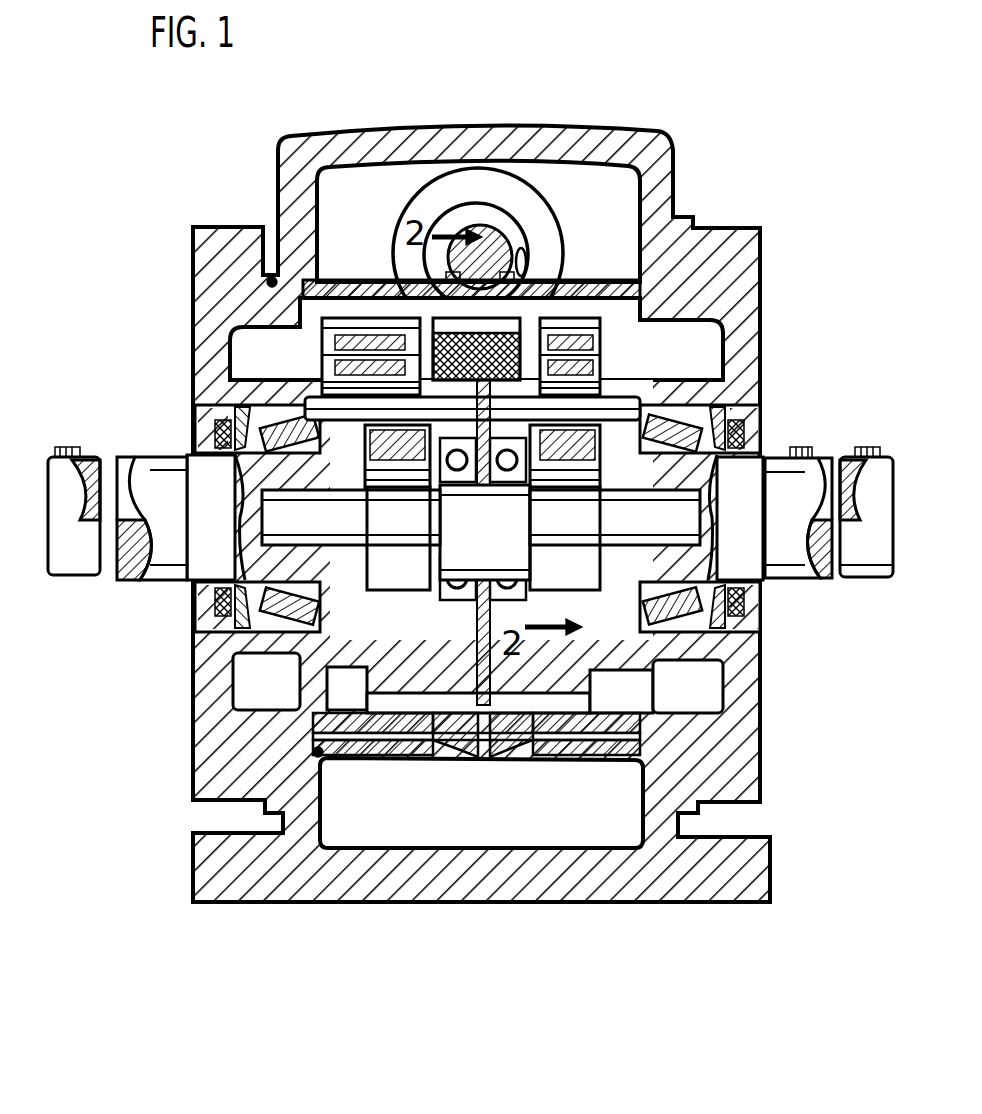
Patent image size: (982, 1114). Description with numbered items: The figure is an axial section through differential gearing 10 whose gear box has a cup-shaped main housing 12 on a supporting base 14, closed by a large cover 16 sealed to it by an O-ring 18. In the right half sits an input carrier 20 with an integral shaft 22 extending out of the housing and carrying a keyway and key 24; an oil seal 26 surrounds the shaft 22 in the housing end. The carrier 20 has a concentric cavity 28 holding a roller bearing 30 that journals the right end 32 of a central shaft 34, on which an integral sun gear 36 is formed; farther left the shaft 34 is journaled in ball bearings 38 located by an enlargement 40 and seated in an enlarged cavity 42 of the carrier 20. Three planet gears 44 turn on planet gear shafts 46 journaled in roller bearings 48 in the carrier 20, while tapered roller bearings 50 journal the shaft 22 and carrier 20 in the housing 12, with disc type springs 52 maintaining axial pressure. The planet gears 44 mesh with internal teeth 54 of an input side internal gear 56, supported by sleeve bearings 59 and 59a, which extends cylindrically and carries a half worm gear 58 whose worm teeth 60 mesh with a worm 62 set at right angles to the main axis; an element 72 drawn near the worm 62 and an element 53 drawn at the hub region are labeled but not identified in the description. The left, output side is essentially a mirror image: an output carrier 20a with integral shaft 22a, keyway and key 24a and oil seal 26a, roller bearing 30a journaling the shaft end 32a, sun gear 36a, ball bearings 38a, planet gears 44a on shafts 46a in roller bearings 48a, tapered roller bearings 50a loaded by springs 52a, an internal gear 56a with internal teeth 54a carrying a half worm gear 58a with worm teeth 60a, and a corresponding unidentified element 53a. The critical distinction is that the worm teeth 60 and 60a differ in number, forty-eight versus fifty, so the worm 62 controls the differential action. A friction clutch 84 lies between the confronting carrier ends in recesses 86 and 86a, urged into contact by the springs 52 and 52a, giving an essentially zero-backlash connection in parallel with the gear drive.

The differential gearing 10 is at (534, 110).
The main housing 12 is at (655, 132).
The supporting base 14 is at (495, 900).
The large cover 16 is at (218, 233).
The O-ring 18 is at (270, 278).
The input carrier 20 is at (610, 666).
The output carrier 20a is at (345, 668).
The integral shaft 22 is at (788, 462).
The integral output shaft 22a is at (160, 565).
The keyway and key 24 is at (856, 452).
The keyway and key 24a is at (74, 511).
The oil seal 26 is at (765, 420).
The oil seal 26a is at (235, 428).
The cylindrical concentric cavity 28 is at (702, 497).
The roller bearing 30 is at (662, 492).
The roller bearing 30a is at (285, 498).
The right end of shaft 32 is at (740, 518).
The left end of shaft 32a is at (240, 505).
The shaft 34 is at (600, 542).
The sun gear 36 is at (565, 550).
The sun gear 36a is at (393, 540).
The ball bearings 38 is at (548, 546).
The ball bearings 38a is at (445, 600).
The enlargement 40 is at (476, 626).
The enlarged cavity 42 is at (590, 576).
The planet gears 44 is at (600, 355).
The planet gears 44a is at (370, 370).
The planet gear shafts 46 is at (650, 396).
The planet gear shafts 46a is at (320, 386).
The roller bearings 48 is at (620, 386).
The roller bearings 48a is at (300, 364).
The tapered roller bearings 50 is at (688, 686).
The tapered roller bearings 50a is at (266, 681).
The disc type springs 52 is at (745, 610).
The disc type springs 52a is at (240, 615).
The hub 53 is at (520, 494).
The hub shaft 53a is at (350, 520).
The internal teeth 54 is at (614, 282).
The internal teeth 54a is at (350, 330).
The input side internal gear 56 is at (592, 300).
The output side internal gear 56a is at (480, 324).
The half worm gear 58 is at (526, 280).
The half worm gear 58a is at (500, 276).
The sleeve bearing 59 is at (625, 242).
The sleeve bearing 59a is at (333, 278).
The worm teeth 60 is at (523, 258).
The worm teeth 60a is at (446, 274).
The worm 62 is at (452, 222).
The outer ring 72 is at (478, 216).
The clutch or friction connection 84 is at (494, 746).
The recess 86 is at (520, 742).
The recess 86a is at (490, 662).